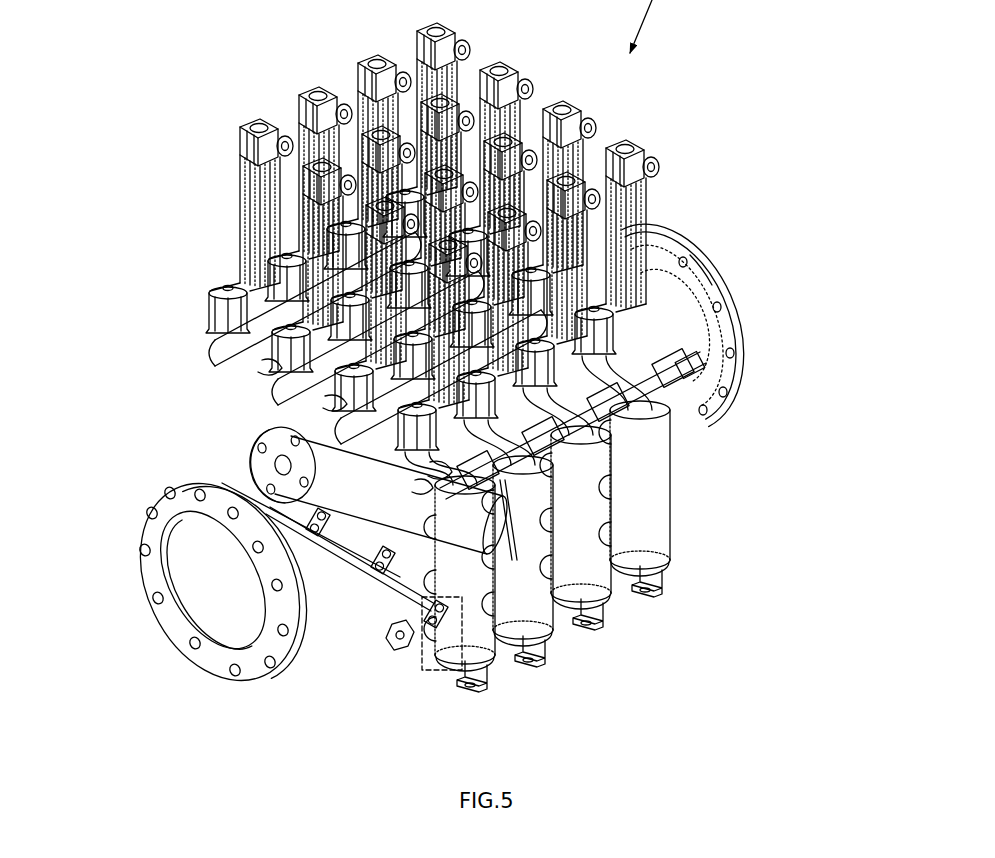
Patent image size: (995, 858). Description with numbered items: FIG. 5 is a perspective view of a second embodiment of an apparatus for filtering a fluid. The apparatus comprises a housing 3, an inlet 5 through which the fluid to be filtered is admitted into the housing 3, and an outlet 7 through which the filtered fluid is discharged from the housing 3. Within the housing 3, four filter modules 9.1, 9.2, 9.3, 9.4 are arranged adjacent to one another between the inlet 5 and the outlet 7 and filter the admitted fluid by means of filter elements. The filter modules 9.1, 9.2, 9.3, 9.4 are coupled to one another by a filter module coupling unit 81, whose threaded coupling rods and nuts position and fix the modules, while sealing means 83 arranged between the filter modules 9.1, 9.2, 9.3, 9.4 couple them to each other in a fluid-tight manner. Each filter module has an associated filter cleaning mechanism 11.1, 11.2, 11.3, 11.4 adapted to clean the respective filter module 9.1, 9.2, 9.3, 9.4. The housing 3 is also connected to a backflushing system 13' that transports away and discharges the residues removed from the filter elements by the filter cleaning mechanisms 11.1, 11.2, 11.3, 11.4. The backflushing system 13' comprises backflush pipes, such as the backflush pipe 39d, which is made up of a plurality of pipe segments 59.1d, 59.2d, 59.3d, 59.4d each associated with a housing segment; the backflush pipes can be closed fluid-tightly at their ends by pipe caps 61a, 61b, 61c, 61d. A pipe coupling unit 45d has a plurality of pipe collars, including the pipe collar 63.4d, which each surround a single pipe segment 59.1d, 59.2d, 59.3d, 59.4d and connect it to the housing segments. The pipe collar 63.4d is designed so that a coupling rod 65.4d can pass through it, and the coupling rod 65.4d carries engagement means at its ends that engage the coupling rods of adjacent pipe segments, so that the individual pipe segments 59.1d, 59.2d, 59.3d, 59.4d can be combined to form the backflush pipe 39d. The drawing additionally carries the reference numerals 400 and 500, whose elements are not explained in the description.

The filter cleaning mechanism 11.1 is at (240, 138).
The filter cleaning mechanism 11.2 is at (298, 104).
The filter cleaning mechanism 11.3 is at (350, 70).
The filter cleaning mechanism 11.4 is at (412, 35).
The outlet 7 is at (700, 236).
The backflush pipe 39d is at (700, 316).
The pipe coupling unit 45d is at (710, 338).
The pipe collar 63.4d is at (657, 364).
The coupling rod 65.4d is at (712, 391).
The housing 3 is at (212, 357).
The pipe cap 61a is at (265, 367).
The pipe cap 61b is at (330, 403).
The pipe cap 61c is at (437, 470).
The pipe cap 61d is at (428, 472).
The backflushing system 13' is at (238, 463).
The filter module coupling unit 81 is at (365, 562).
The inlet 5 is at (143, 603).
The sensor fitting 400 is at (398, 650).
The control unit 500 is at (462, 670).
The filter module 9.1 is at (471, 639).
The filter module 9.2 is at (530, 610).
The filter module 9.3 is at (589, 576).
The filter module 9.4 is at (653, 544).
The sealing means 83 is at (510, 470).
The pipe segment 59.1d is at (549, 475).
The pipe segment 59.2d is at (597, 450).
The pipe segment 59.3d is at (657, 425).
The pipe segment 59.4d is at (713, 412).